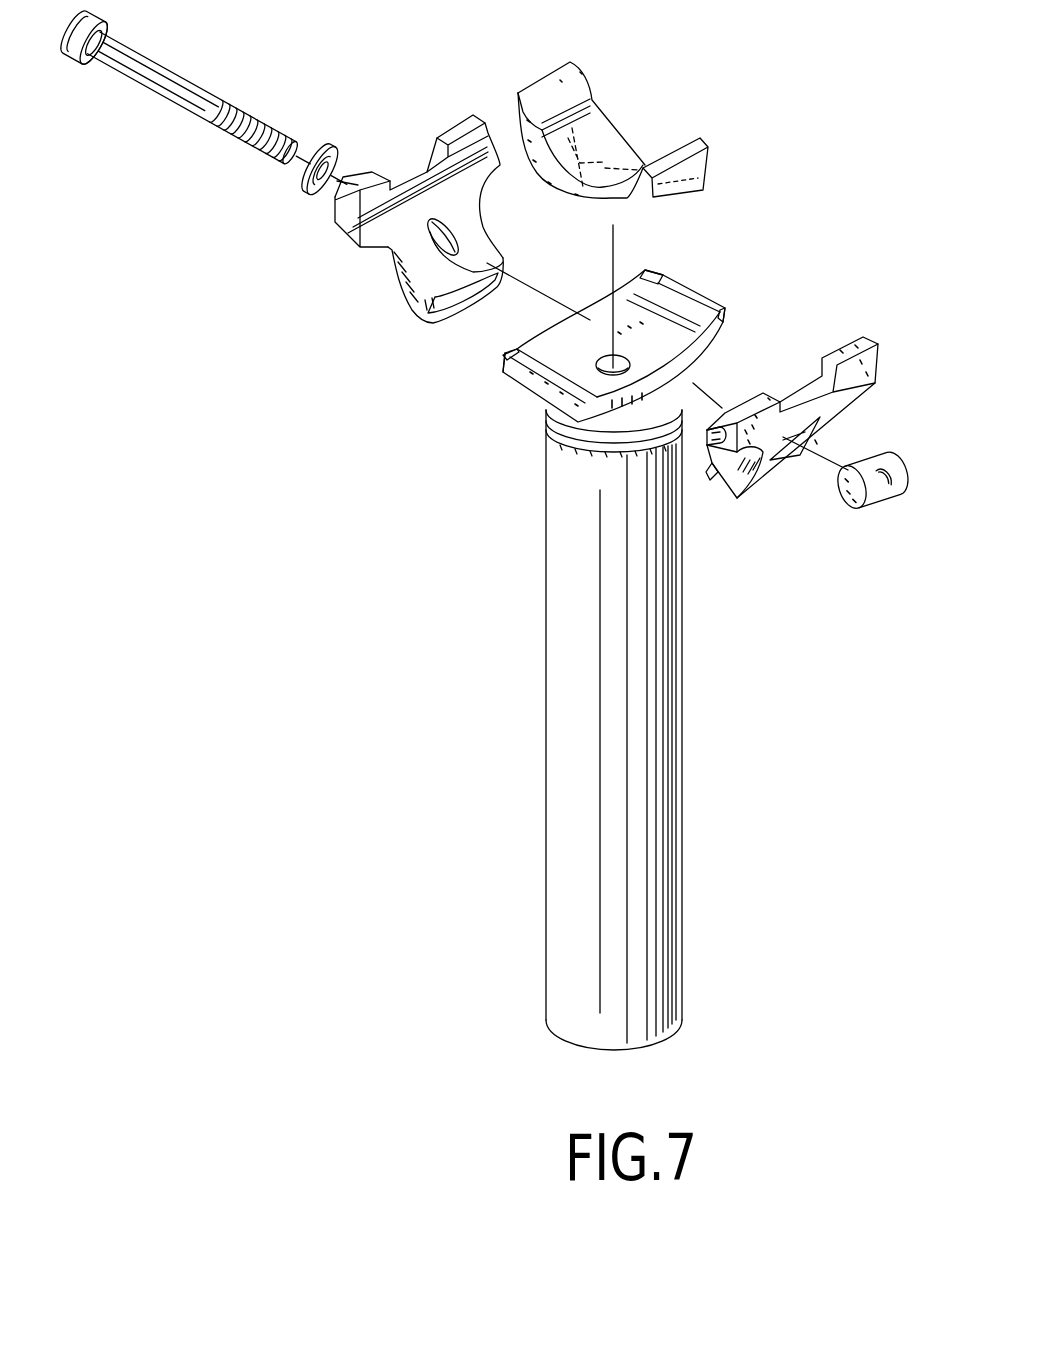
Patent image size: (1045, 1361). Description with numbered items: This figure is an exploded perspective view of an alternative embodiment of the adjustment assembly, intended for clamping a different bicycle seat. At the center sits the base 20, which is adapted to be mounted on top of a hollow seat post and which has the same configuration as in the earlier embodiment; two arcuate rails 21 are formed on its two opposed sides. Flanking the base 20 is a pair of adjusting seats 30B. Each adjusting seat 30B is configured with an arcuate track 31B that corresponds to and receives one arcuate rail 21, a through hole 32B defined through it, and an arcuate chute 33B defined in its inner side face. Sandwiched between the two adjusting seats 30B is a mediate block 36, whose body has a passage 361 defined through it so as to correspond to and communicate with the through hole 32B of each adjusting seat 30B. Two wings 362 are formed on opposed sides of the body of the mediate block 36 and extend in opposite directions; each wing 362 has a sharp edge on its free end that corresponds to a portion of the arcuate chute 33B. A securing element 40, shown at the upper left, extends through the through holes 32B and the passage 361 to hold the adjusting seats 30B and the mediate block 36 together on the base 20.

The securing element 40 is at (158, 119).
The mediate block 36 is at (632, 115).
The passage 361 is at (617, 142).
The wings 362 is at (518, 95).
The base 20 is at (653, 325).
The arcuate rails 21 is at (718, 283).
The adjusting seats 30B is at (584, 344).
The arcuate chute 33B is at (350, 226).
The through hole 32B is at (447, 238).
The arcuate track 31B is at (363, 282).